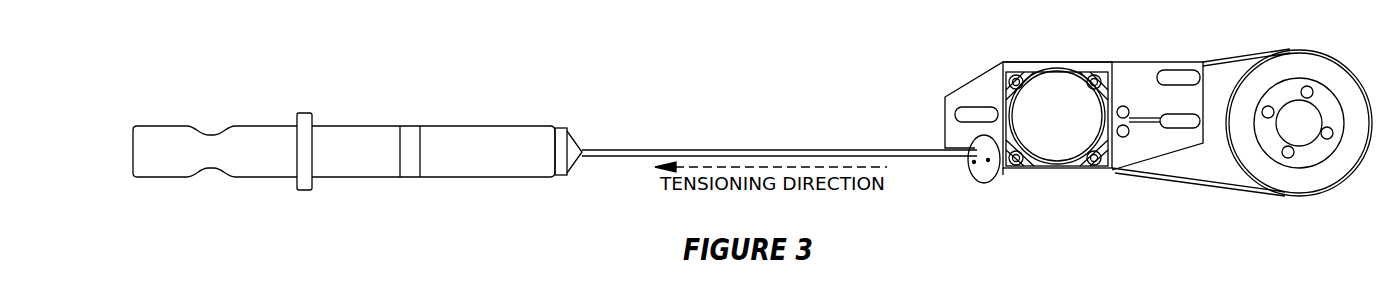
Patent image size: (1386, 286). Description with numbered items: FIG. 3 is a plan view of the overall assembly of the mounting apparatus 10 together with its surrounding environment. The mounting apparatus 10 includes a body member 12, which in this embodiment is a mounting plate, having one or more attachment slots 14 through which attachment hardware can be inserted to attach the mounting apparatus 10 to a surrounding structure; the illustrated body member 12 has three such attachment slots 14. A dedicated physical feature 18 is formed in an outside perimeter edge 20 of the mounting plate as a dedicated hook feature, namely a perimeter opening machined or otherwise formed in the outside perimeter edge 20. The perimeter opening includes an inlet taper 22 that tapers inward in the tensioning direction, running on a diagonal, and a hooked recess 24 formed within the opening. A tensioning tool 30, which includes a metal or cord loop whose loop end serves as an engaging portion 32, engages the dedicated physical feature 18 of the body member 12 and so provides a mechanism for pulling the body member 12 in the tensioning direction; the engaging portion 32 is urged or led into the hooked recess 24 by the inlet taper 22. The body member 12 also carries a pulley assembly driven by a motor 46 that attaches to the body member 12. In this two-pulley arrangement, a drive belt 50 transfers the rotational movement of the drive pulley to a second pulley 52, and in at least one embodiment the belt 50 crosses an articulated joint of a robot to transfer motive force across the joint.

The mounting apparatus 10 is at (1125, 139).
The body member 12 is at (995, 80).
The attachment slots 14 is at (980, 112).
The dedicated physical feature 18 is at (979, 168).
The outside perimeter edge 20 is at (1003, 175).
The inlet taper 22 is at (988, 160).
The hooked recess 24 is at (974, 162).
The tensioning tool 30 is at (566, 81).
The engaging portion 32 is at (975, 150).
The motor 46 is at (1062, 92).
The drive belt 50 is at (1200, 175).
The second pulley 52 is at (1308, 185).